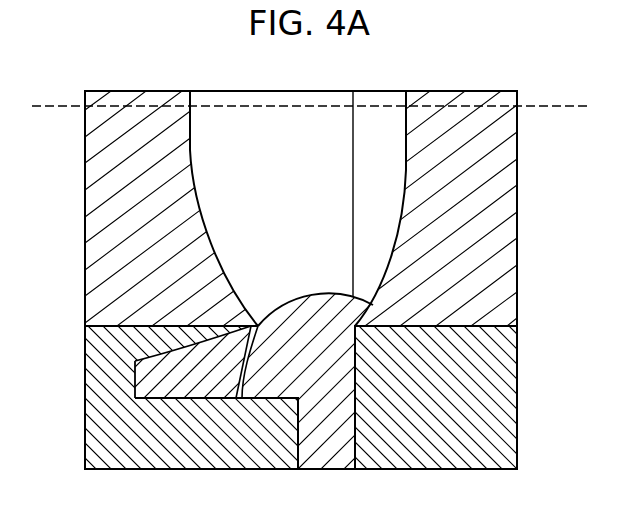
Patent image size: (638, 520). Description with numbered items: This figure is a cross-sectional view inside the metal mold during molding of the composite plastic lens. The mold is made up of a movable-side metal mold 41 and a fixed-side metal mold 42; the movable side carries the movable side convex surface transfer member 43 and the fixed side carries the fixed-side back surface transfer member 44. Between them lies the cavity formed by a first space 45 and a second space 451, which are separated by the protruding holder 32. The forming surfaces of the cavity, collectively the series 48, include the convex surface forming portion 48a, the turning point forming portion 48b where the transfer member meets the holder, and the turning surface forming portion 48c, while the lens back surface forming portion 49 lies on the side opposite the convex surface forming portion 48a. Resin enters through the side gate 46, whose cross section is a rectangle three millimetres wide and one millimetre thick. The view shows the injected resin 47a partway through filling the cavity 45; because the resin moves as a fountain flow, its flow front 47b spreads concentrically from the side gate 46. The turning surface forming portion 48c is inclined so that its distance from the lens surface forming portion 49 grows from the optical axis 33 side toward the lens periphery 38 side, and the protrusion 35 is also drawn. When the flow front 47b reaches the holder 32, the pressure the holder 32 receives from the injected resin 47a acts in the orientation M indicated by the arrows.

The optical axis 33 is at (60, 107).
The movable side convex surface transfer member 43 is at (95, 248).
The fixed-side back surface transfer member 44 is at (510, 133).
The flow front 47b is at (303, 297).
The lens back surface forming portion 49 is at (395, 248).
The first space 45 is at (330, 228).
The surface portion 48 is at (208, 245).
The convex surface forming portion 48a is at (225, 289).
The turning point forming portion 48b is at (368, 311).
The turning surface forming portion 48c is at (233, 378).
The side gate 46 is at (327, 452).
The protrusion 35 is at (335, 375).
The lens periphery 38 is at (243, 372).
The orientation of pressure M is at (250, 357).
The holder 32 is at (140, 368).
The movable-side metal mold 41 is at (127, 382).
The fixed-side metal mold 42 is at (488, 430).
The second space 451 is at (340, 338).
The injected resin 47a is at (342, 352).